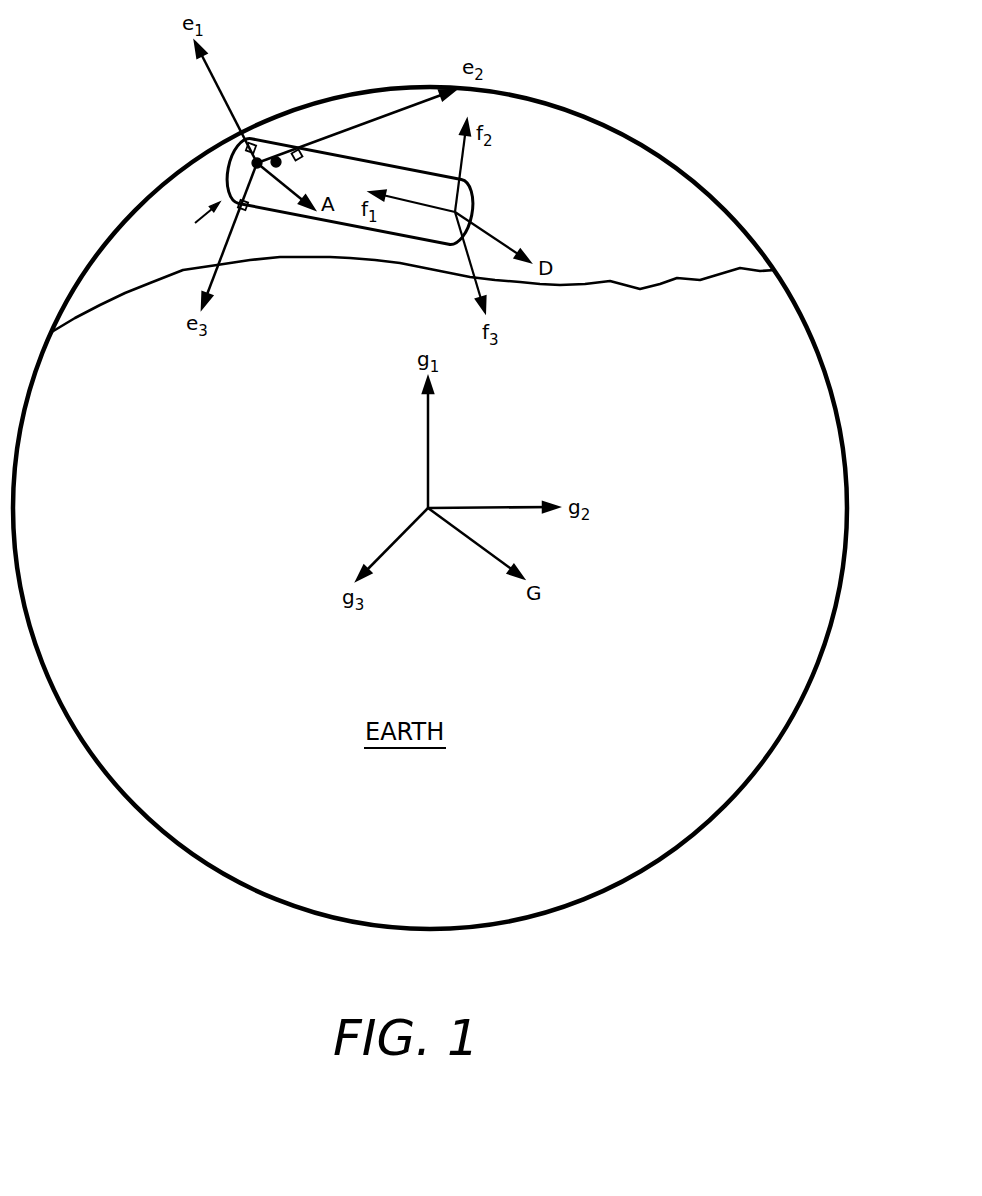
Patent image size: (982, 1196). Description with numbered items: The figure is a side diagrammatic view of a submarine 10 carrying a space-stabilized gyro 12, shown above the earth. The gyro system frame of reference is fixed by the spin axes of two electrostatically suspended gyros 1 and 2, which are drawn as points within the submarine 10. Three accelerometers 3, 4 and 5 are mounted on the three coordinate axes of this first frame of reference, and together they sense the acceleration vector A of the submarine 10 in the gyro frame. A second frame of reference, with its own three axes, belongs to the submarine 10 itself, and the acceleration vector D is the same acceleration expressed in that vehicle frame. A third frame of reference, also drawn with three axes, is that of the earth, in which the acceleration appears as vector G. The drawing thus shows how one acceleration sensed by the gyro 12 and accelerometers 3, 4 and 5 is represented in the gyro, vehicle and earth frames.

The electrostatically suspended gyro 1 is at (262, 159).
The electrostatically suspended gyro 2 is at (281, 166).
The accelerometer 3 is at (250, 143).
The accelerometer 4 is at (300, 150).
The accelerometer 5 is at (246, 208).
The submarine 10 is at (229, 174).
The space-stabilized gyro 12 is at (192, 220).